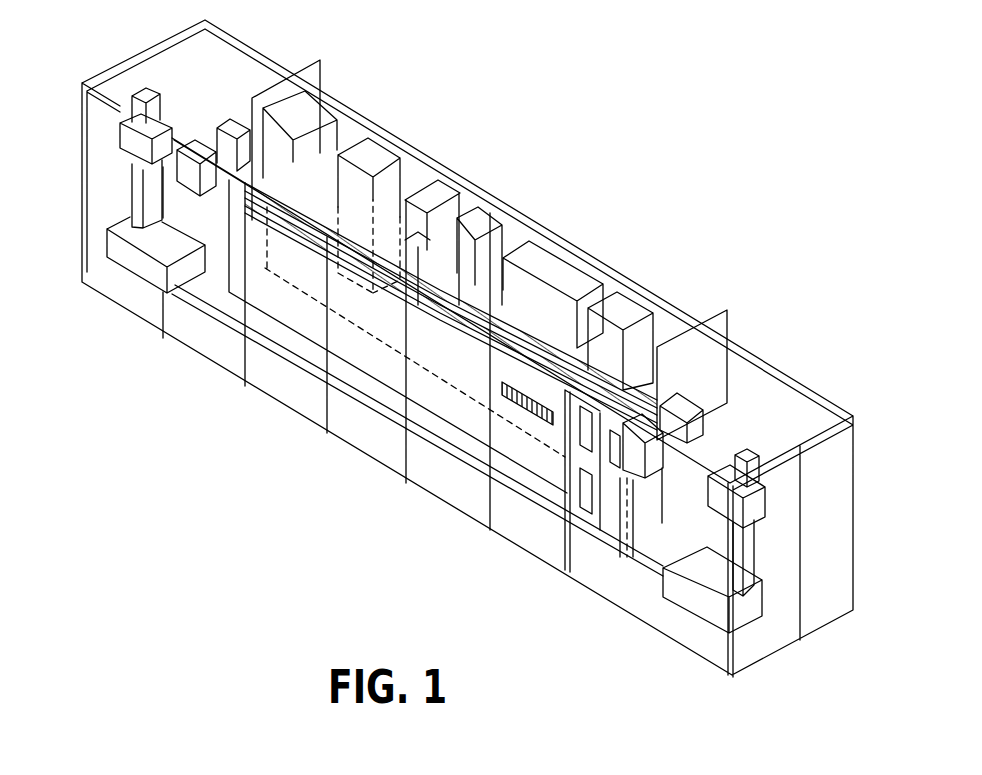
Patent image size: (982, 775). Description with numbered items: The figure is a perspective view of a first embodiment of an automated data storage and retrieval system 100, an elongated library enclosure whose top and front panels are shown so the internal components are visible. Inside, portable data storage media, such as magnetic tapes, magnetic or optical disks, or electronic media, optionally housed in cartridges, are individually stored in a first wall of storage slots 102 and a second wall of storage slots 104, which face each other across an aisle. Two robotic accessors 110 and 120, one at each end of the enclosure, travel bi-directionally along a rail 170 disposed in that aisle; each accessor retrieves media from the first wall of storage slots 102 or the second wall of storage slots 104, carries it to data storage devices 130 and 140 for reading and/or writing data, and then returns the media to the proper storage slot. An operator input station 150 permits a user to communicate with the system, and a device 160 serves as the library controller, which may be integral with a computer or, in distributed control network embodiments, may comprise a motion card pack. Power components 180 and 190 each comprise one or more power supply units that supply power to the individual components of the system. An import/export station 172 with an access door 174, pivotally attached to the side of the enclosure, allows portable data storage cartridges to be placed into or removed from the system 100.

The automated data storage and retrieval system 100 is at (518, 565).
The first wall of storage slots 102 is at (313, 227).
The second wall of storage slots 104 is at (310, 323).
The accessor 110 is at (128, 148).
The accessor 120 is at (755, 506).
The data storage device 130 is at (440, 192).
The data storage device 140 is at (485, 215).
The operator input station 150 is at (378, 157).
The library controller 160 is at (322, 117).
The rail 170 is at (378, 407).
The import/export station 172 is at (623, 553).
The access door 174 is at (598, 520).
The power component 180 is at (723, 403).
The power component 190 is at (665, 440).